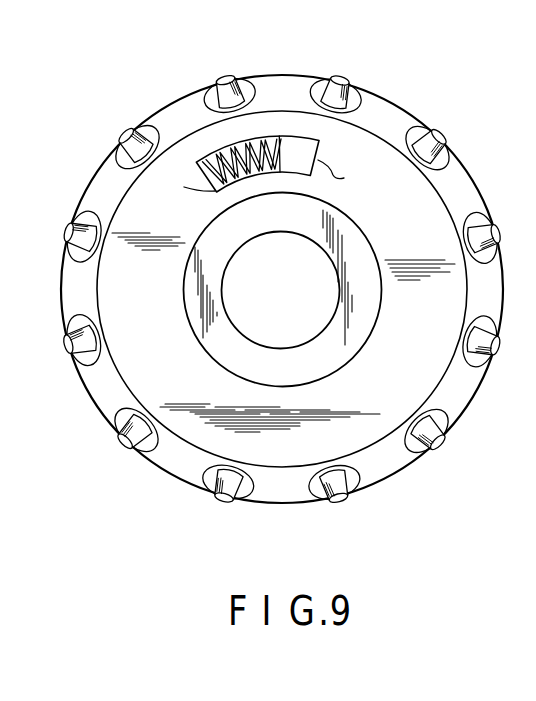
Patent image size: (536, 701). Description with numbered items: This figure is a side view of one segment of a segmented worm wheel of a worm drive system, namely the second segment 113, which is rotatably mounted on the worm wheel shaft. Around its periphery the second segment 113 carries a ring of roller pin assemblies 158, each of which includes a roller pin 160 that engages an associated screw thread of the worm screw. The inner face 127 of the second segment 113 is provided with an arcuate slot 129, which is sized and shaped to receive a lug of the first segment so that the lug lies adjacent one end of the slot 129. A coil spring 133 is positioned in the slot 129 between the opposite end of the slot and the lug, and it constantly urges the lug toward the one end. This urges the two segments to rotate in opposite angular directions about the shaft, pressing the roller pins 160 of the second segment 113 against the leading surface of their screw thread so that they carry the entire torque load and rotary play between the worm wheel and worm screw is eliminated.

The second segment 113 is at (380, 483).
The inner face 127 is at (428, 214).
The arcuate slot 129 is at (297, 140).
The coil spring 133 is at (207, 160).
The roller pin assemblies 158 is at (348, 78).
The roller pin 160 is at (438, 134).